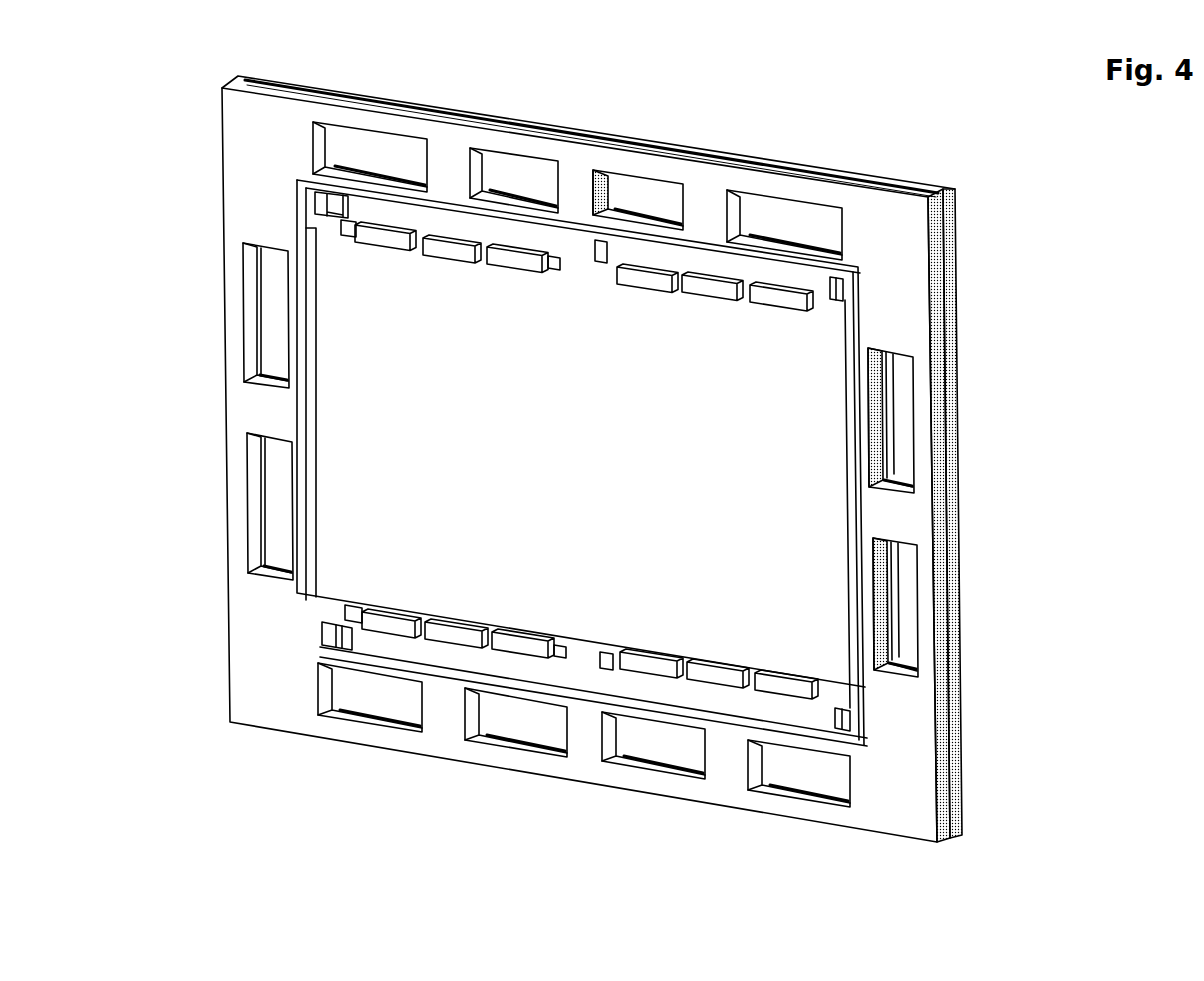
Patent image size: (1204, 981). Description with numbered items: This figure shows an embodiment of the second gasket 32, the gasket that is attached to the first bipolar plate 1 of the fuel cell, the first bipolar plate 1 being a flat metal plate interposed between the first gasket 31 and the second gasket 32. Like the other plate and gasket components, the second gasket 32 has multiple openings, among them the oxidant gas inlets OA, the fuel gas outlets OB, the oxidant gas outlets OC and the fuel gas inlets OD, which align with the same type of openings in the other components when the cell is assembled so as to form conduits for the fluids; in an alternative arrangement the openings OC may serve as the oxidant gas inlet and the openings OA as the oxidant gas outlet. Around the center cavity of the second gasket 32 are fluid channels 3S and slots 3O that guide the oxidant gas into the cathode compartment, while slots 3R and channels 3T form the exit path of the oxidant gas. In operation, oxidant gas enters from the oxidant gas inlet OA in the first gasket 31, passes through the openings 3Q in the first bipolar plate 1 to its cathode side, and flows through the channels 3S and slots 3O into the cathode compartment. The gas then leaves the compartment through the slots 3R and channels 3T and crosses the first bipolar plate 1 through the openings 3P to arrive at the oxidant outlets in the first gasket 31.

The first bipolar plate 1 is at (815, 421).
The first gasket 31 is at (947, 211).
The second gasket 32 is at (883, 205).
The openings 3P is at (343, 203).
The openings 3Q is at (348, 630).
The slots 3R is at (418, 233).
The fluid channels 3S is at (647, 686).
The channels 3T is at (540, 240).
The slots 3O is at (820, 692).
The oxidant gas inlet OA is at (385, 707).
The fuel gas outlet OB is at (662, 748).
The oxidant gas outlet OC is at (395, 148).
The fuel gas inlet OD is at (637, 185).